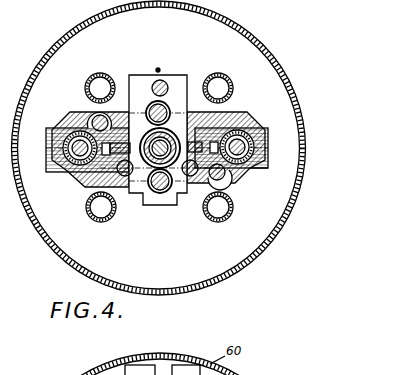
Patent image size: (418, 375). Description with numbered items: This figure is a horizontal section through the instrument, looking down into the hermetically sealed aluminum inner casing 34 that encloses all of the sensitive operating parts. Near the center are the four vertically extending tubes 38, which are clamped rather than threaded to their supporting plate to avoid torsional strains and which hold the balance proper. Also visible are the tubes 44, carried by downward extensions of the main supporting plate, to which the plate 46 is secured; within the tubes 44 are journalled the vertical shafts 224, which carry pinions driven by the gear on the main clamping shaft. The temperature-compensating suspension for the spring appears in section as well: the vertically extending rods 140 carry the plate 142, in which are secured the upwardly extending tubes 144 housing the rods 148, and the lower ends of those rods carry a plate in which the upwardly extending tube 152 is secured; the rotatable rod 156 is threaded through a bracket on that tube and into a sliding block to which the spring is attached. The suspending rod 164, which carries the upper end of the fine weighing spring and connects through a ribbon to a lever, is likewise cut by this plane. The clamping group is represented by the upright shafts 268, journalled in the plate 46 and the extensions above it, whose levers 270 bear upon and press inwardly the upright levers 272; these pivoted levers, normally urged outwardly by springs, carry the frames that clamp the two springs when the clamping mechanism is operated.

The inner casing 34 is at (282, 62).
The vertically extending tubes 38 is at (100, 73).
The tubes 44 is at (46, 138).
The plate 46 is at (263, 162).
The vertically extending rods 140 is at (162, 81).
The plate 142 is at (138, 76).
The upwardly extending tubes 144 is at (152, 110).
The rods 148 is at (172, 104).
The upwardly extending tube 152 is at (196, 141).
The rotatable rod 156 is at (122, 141).
The suspending rod 164 is at (158, 68).
The vertical shafts 224 is at (78, 145).
The upright shafts 268 is at (96, 116).
The levers 270 is at (85, 167).
The upright levers 272 is at (112, 164).